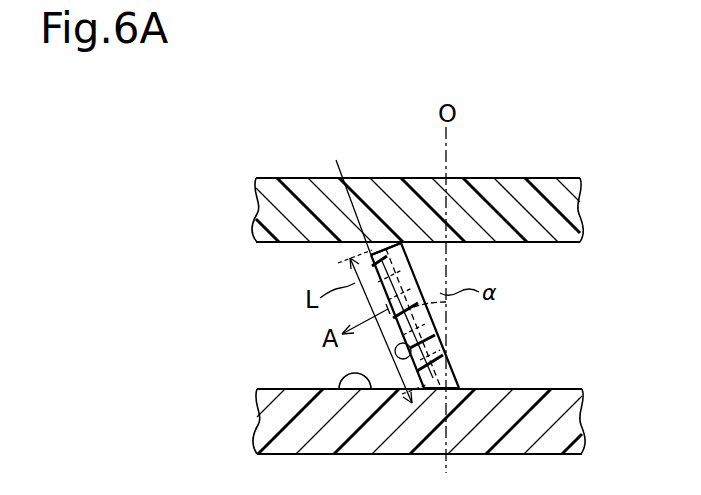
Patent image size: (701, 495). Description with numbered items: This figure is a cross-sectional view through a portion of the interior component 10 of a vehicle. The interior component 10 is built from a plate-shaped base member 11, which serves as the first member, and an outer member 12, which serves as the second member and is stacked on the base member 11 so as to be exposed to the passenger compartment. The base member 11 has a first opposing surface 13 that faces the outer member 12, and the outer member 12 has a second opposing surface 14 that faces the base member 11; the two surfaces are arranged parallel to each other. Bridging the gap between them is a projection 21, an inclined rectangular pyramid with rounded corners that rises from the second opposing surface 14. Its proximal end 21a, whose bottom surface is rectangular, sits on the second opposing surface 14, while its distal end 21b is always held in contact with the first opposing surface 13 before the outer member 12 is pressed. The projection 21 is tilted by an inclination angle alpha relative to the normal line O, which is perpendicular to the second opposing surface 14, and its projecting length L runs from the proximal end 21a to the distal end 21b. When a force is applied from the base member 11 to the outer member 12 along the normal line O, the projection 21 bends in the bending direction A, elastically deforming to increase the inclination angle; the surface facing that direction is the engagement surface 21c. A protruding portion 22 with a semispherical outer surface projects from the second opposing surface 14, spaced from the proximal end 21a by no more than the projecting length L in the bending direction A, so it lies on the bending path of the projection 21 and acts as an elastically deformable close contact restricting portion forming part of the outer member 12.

The interior component 10 is at (203, 142).
The base member 11 is at (578, 218).
The outer member 12 is at (579, 424).
The first opposing surface 13 is at (268, 243).
The second opposing surface 14 is at (272, 389).
The projection 21 is at (560, 250).
The proximal end 21a is at (461, 376).
The distal end 21b is at (404, 248).
The engagement surface 21c is at (411, 350).
The protruding portion 22 is at (345, 376).